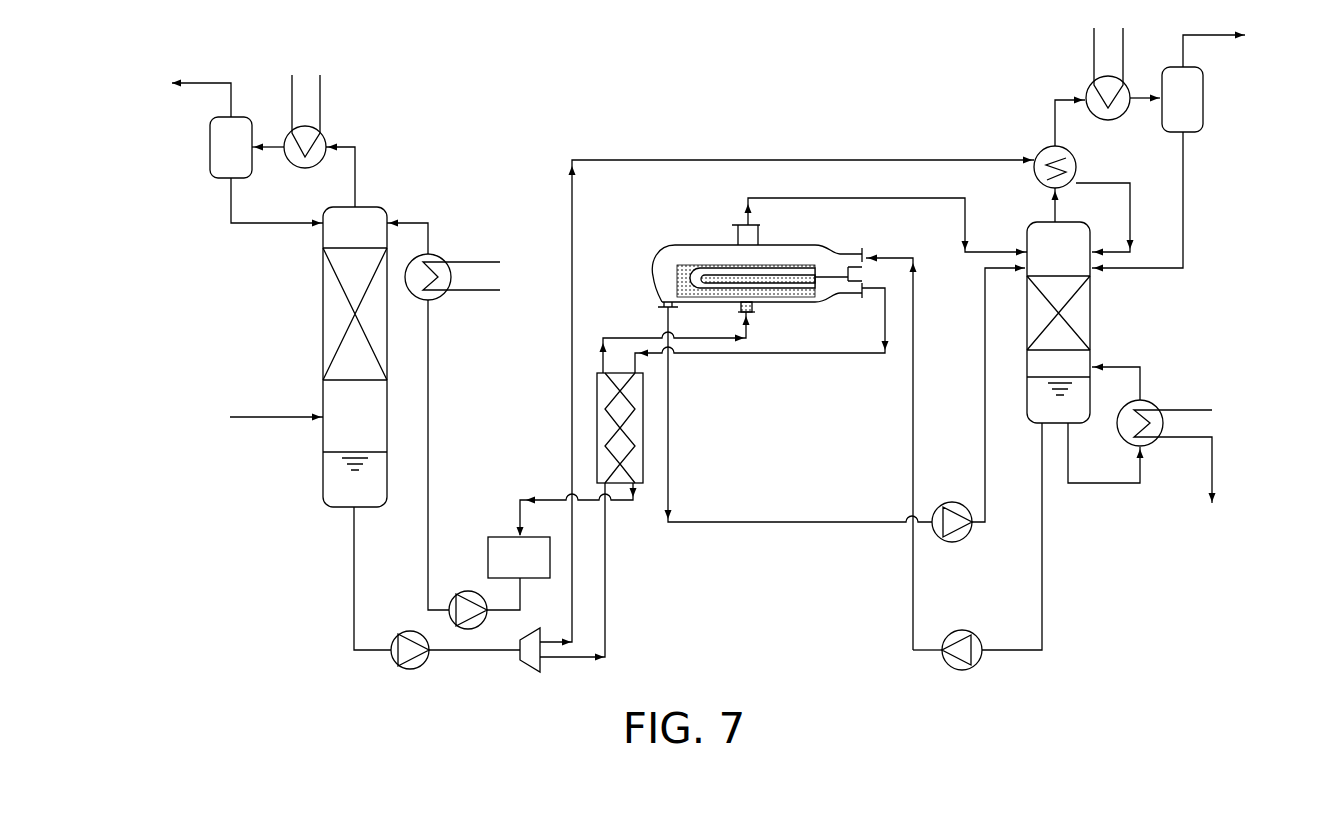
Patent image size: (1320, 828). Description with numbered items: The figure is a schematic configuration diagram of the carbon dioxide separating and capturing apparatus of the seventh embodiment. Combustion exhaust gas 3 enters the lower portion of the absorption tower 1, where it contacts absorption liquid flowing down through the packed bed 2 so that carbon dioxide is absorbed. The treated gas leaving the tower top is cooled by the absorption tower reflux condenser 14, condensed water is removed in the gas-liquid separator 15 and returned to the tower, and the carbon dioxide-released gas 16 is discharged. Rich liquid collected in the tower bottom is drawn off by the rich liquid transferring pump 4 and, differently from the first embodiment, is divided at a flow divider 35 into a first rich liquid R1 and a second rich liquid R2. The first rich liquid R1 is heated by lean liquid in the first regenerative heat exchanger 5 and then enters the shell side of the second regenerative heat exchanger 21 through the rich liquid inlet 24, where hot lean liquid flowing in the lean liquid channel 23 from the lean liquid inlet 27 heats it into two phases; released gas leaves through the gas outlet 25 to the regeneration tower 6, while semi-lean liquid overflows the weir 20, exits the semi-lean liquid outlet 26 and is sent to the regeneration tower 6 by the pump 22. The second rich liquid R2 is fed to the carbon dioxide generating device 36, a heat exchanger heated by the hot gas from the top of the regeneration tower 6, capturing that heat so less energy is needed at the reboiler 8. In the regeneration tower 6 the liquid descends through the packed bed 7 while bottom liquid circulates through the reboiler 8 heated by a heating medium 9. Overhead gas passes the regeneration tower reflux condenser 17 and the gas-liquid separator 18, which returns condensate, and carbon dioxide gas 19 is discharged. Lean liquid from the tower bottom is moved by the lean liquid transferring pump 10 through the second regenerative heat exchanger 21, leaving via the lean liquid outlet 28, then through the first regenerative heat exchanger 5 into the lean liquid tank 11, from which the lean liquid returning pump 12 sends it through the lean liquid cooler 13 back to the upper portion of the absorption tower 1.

The absorption tower 1 is at (385, 207).
The packed bed 2 is at (323, 265).
The combustion exhaust gas 3 is at (278, 417).
The rich liquid transferring pump 4 is at (395, 662).
The first regenerative heat exchanger 5 is at (598, 373).
The regeneration tower 6 is at (1030, 224).
The packed bed 7 is at (1092, 317).
The reboiler 8 is at (1152, 400).
The heating medium 9 is at (1196, 410).
The lean liquid transferring pump 10 is at (975, 668).
The lean liquid tank 11 is at (500, 537).
The lean liquid returning pump 12 is at (458, 595).
The lean liquid cooler 13 is at (435, 255).
The absorption tower reflux condenser 14 is at (325, 131).
The gas-liquid separator 15 is at (215, 179).
The carbon dioxide-released gas 16 is at (214, 82).
The regeneration tower reflux condenser 17 is at (1093, 60).
The gas-liquid separator 18 is at (1205, 92).
The carbon dioxide gas 19 is at (1215, 35).
The weir 20 is at (678, 265).
The second regenerative heat exchanger 21 is at (660, 246).
The pump 22 is at (968, 538).
The lean liquid channel 23 is at (782, 266).
The rich liquid inlet 24 is at (752, 316).
The gas outlet 25 is at (745, 222).
The semi-lean liquid outlet 26 is at (660, 311).
The lean liquid inlet 27 is at (868, 250).
The lean liquid outlet 28 is at (866, 298).
The flow divider 35 is at (520, 655).
The carbon dioxide generating device 36 is at (1038, 152).
The first rich liquid R1 is at (575, 660).
The second rich liquid R2 is at (558, 640).